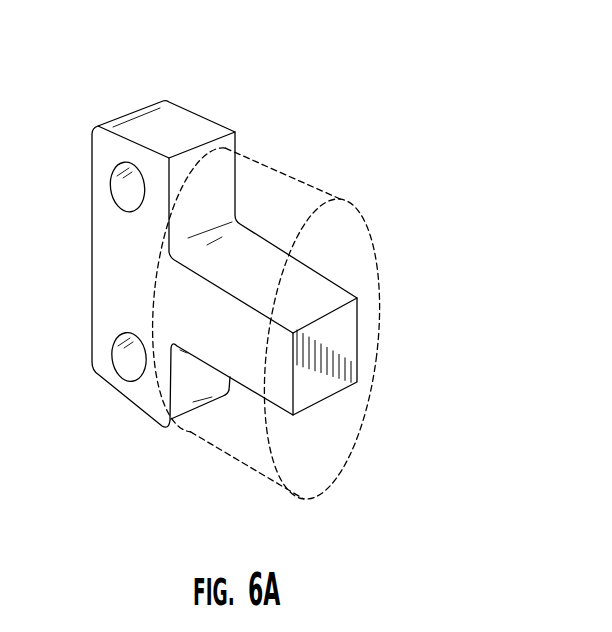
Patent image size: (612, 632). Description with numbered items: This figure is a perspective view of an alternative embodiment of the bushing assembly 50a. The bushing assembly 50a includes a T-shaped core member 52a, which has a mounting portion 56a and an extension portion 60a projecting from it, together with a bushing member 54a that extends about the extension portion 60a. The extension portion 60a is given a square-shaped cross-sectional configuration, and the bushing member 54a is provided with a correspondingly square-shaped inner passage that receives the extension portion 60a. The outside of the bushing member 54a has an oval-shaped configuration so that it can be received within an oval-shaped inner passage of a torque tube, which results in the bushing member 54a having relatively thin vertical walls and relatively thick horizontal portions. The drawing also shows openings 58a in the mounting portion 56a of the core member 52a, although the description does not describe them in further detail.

The bushing assembly 50a is at (267, 258).
The T-shaped core member 52a is at (180, 100).
The bushing member 54a is at (331, 187).
The mounting portion 56a is at (120, 121).
The mounting holes 58a is at (120, 184).
The extension portion 60a is at (342, 337).